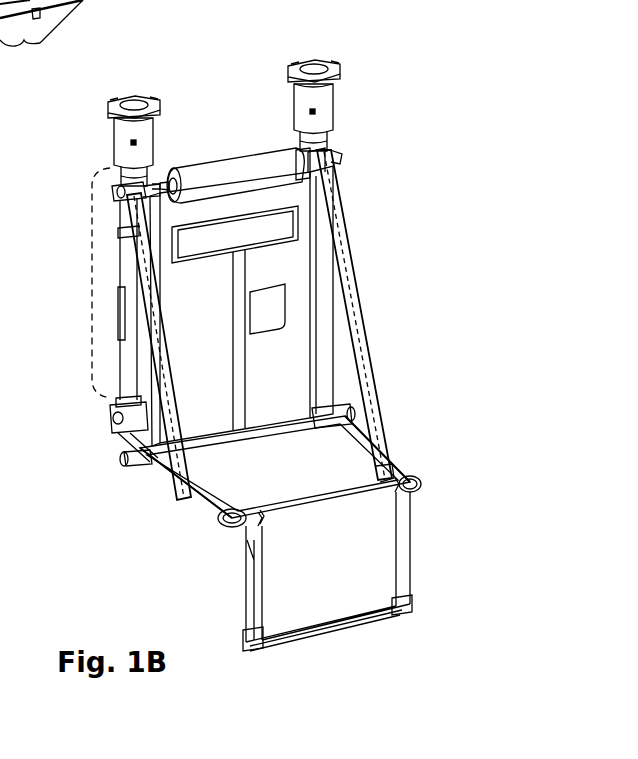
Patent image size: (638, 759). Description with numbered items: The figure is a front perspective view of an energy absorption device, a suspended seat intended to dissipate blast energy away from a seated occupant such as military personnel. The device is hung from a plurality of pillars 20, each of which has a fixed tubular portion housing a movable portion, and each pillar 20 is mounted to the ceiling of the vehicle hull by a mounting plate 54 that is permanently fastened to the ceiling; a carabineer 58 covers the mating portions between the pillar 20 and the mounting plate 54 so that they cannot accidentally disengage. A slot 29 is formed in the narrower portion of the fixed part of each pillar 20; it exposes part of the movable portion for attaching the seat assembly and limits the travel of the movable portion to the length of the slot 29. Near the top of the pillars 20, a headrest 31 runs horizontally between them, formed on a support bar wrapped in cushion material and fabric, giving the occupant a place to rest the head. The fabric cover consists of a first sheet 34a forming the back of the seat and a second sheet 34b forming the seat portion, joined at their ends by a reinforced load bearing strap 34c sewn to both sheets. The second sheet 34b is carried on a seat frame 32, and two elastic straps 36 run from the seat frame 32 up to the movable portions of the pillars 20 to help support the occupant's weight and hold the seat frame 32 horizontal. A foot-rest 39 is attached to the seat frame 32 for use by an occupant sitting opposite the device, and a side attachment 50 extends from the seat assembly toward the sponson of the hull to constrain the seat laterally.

The side attachment 50 is at (41, 39).
The mounting plate 54 is at (314, 68).
The carabineer 58 is at (296, 125).
The headrest 31 is at (246, 186).
The first sheet 34a is at (226, 340).
The reinforced load bearing strap 34c is at (318, 210).
The slot 29 is at (122, 210).
The pillar 20 is at (91, 290).
The elastic strap 36 is at (165, 362).
The second sheet 34b is at (310, 485).
The seat frame 32 is at (417, 478).
The foot-rest 39 is at (245, 628).